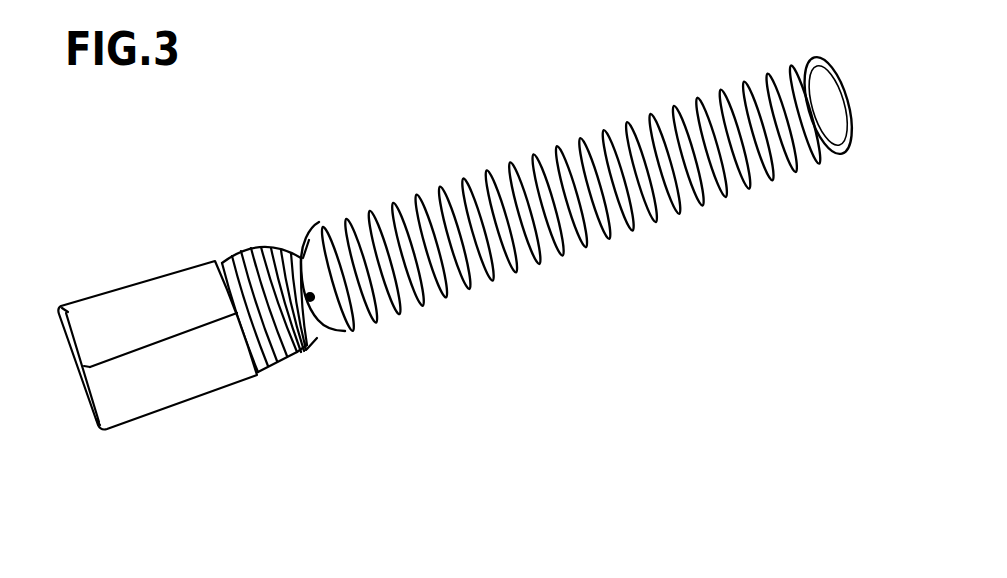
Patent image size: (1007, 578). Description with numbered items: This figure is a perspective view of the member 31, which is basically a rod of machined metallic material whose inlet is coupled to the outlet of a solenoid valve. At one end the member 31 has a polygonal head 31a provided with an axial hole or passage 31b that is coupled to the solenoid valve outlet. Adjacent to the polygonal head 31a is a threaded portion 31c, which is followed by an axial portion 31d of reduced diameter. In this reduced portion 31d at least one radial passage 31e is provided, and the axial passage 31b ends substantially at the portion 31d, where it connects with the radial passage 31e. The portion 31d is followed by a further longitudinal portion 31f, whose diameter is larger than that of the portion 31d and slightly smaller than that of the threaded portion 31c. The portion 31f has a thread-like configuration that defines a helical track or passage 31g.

The member 31 is at (452, 153).
The polygonal head 31a is at (145, 304).
The axial hole or passage 31b is at (73, 380).
The threaded portion 31c is at (283, 365).
The axial portion of reduced diameter 31d is at (291, 254).
The radial passage 31e is at (317, 305).
The further longitudinal portion 31f is at (560, 263).
The helical track or passage 31g is at (320, 224).